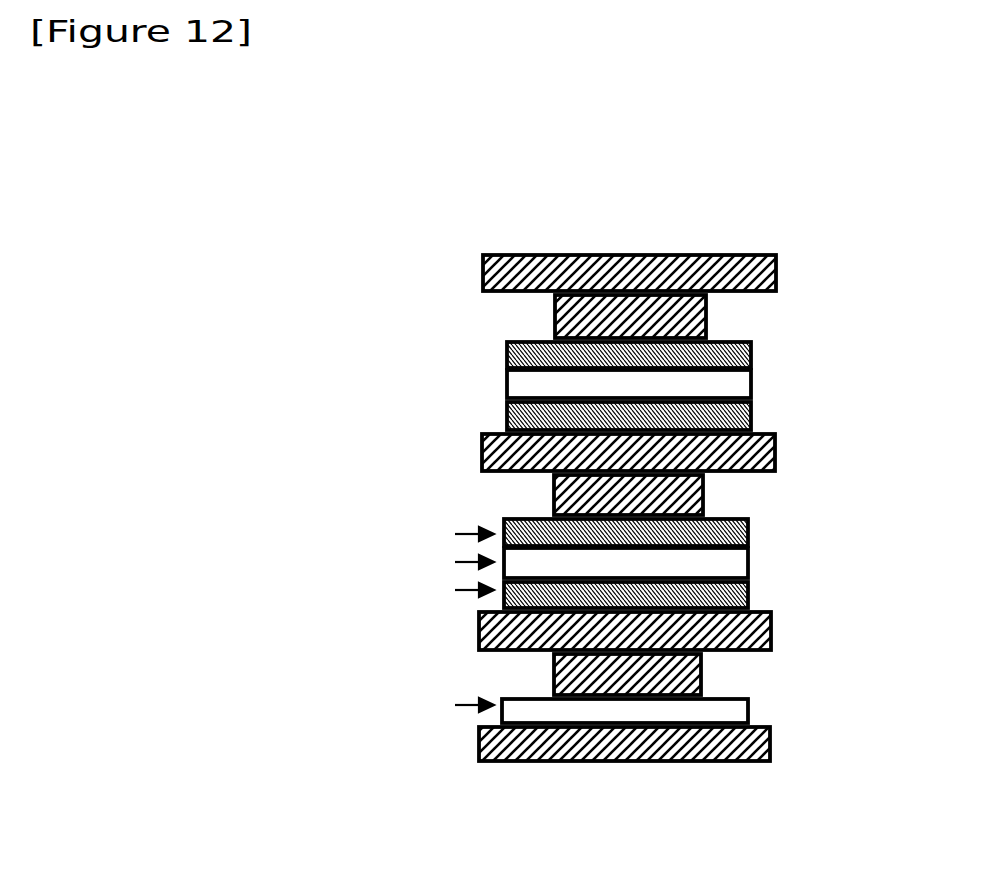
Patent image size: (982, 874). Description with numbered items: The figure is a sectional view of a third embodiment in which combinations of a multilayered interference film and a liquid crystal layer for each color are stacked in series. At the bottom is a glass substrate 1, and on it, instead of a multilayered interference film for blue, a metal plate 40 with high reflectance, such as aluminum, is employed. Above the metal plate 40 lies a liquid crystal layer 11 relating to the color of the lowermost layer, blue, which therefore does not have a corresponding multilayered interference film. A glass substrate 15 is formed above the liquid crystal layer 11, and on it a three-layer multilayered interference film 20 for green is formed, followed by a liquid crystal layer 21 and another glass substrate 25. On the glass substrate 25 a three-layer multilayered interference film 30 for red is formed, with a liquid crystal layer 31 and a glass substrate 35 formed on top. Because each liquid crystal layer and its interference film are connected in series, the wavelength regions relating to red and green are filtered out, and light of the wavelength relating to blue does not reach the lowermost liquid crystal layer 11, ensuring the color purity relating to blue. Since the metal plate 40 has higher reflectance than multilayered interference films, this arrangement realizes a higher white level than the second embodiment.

The glass substrate 35 is at (778, 273).
The liquid crystal layer 31 is at (710, 317).
The multilayered interference film 30 is at (776, 345).
The glass substrate 25 is at (777, 457).
The liquid crystal layer 21 is at (708, 498).
The multilayered interference film 20 is at (776, 522).
The glass substrate 15 is at (773, 622).
The liquid crystal layer 11 is at (703, 673).
The metal plate 40 is at (728, 712).
The glass substrate 1 is at (772, 743).